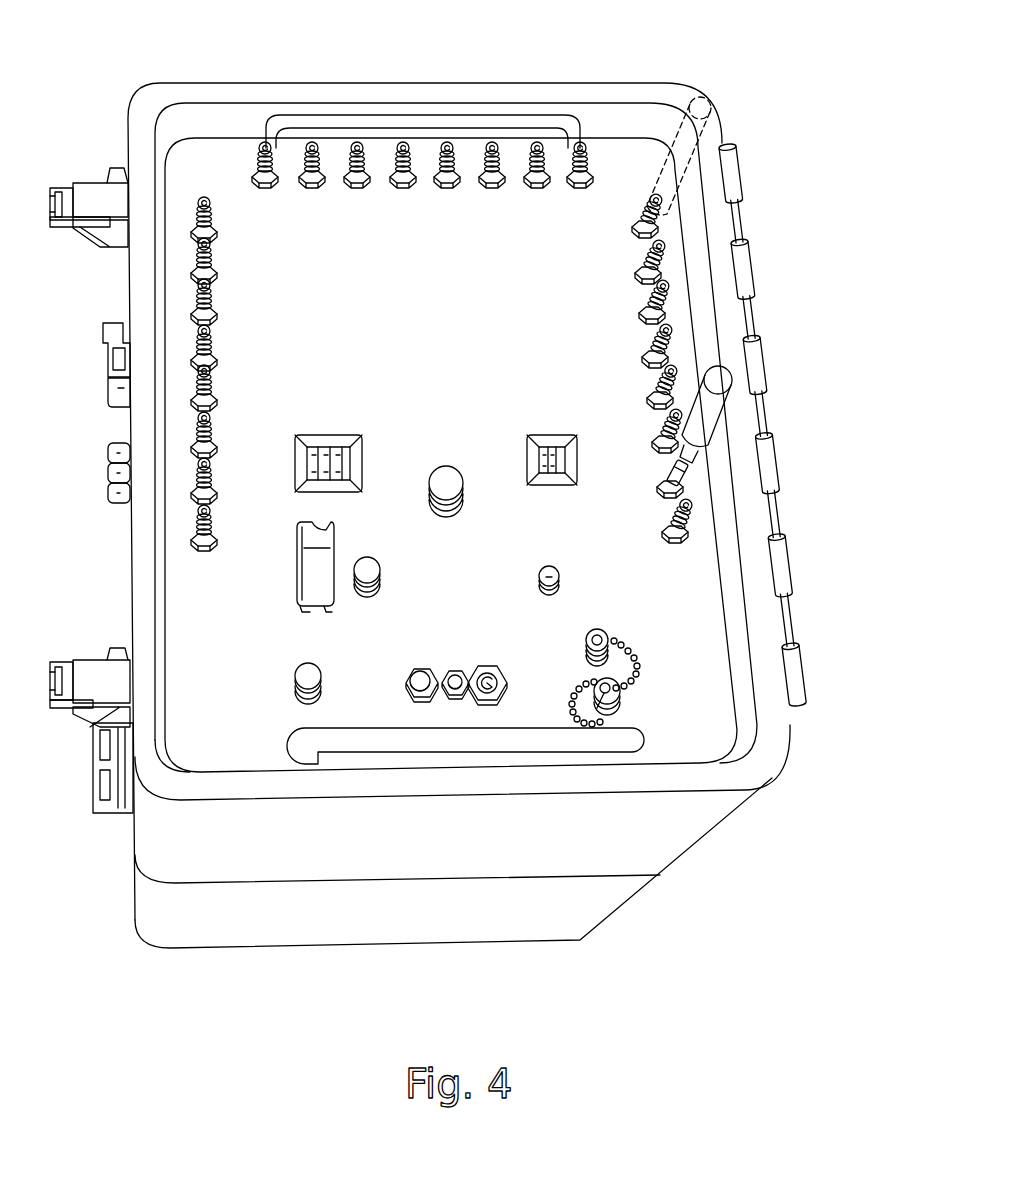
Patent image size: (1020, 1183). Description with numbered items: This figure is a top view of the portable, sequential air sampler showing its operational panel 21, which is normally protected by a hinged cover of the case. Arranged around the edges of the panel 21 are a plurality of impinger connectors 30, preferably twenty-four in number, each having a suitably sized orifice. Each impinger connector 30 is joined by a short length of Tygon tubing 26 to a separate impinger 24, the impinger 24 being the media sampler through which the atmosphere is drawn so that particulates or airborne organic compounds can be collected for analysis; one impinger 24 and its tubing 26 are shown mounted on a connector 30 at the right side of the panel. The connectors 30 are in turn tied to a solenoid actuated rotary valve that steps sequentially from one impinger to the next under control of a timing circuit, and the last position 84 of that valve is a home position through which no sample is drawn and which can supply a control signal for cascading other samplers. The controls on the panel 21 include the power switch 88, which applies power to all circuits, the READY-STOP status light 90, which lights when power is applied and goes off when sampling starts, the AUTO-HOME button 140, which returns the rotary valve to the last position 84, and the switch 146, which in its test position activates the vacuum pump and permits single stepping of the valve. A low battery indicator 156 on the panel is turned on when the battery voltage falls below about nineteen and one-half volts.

The operational panel 21 is at (177, 192).
The impinger 24 is at (700, 110).
The Tygon tubing 26 is at (662, 207).
The impinger connector 30 is at (323, 153).
The last position 84 is at (688, 517).
The power switch 88 is at (486, 664).
The READY-STOP status light 90 is at (465, 503).
The AUTO-HOME button 140 is at (288, 683).
The switch 146 is at (290, 590).
The low battery indicator 156 is at (568, 577).